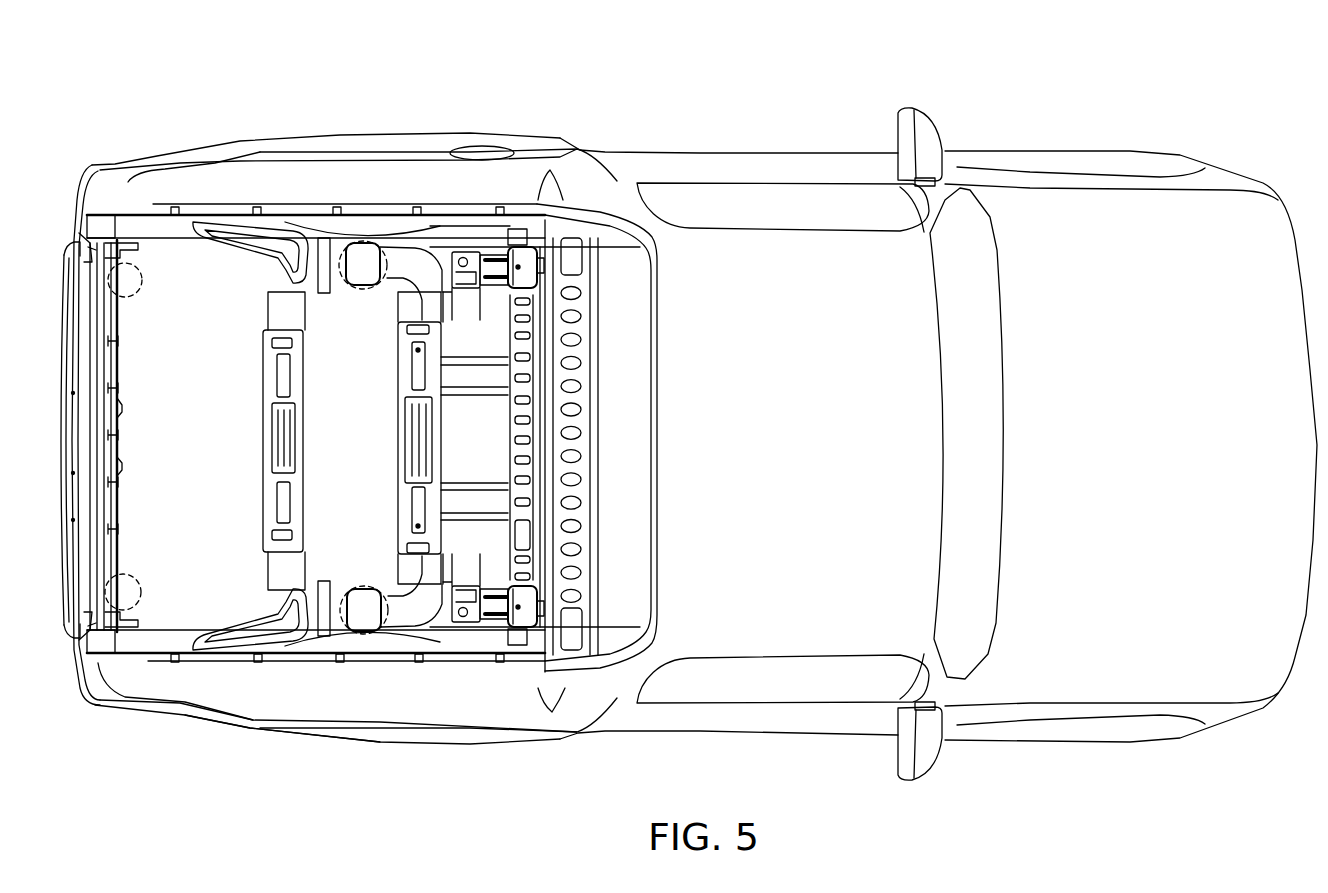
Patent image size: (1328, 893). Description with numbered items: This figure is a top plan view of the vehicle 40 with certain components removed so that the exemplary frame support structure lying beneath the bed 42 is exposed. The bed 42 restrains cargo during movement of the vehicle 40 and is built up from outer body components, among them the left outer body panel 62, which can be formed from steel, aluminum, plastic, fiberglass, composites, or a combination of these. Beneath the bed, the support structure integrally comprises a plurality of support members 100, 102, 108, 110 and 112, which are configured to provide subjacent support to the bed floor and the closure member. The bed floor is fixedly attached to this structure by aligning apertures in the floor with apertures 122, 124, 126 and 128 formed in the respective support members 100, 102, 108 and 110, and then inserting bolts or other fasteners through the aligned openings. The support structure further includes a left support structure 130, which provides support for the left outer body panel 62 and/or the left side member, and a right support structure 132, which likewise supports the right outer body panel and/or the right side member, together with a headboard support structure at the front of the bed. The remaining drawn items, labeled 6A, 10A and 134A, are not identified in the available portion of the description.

The vehicle 40 is at (1000, 108).
The bed 42 is at (495, 100).
The left outer body panel 62 is at (297, 173).
The fender 6A is at (298, 703).
The front fascia 10A is at (100, 665).
The support member 100 is at (530, 243).
The support member 102 is at (363, 237).
The support member 108 is at (530, 652).
The support member 110 is at (366, 636).
The support member 112 is at (98, 703).
The aperture 122 is at (497, 287).
The aperture 124 is at (363, 267).
The aperture 126 is at (497, 597).
The aperture 128 is at (364, 609).
The left support structure 130 is at (248, 228).
The right support structure 132 is at (248, 646).
The radiator 134A is at (584, 438).